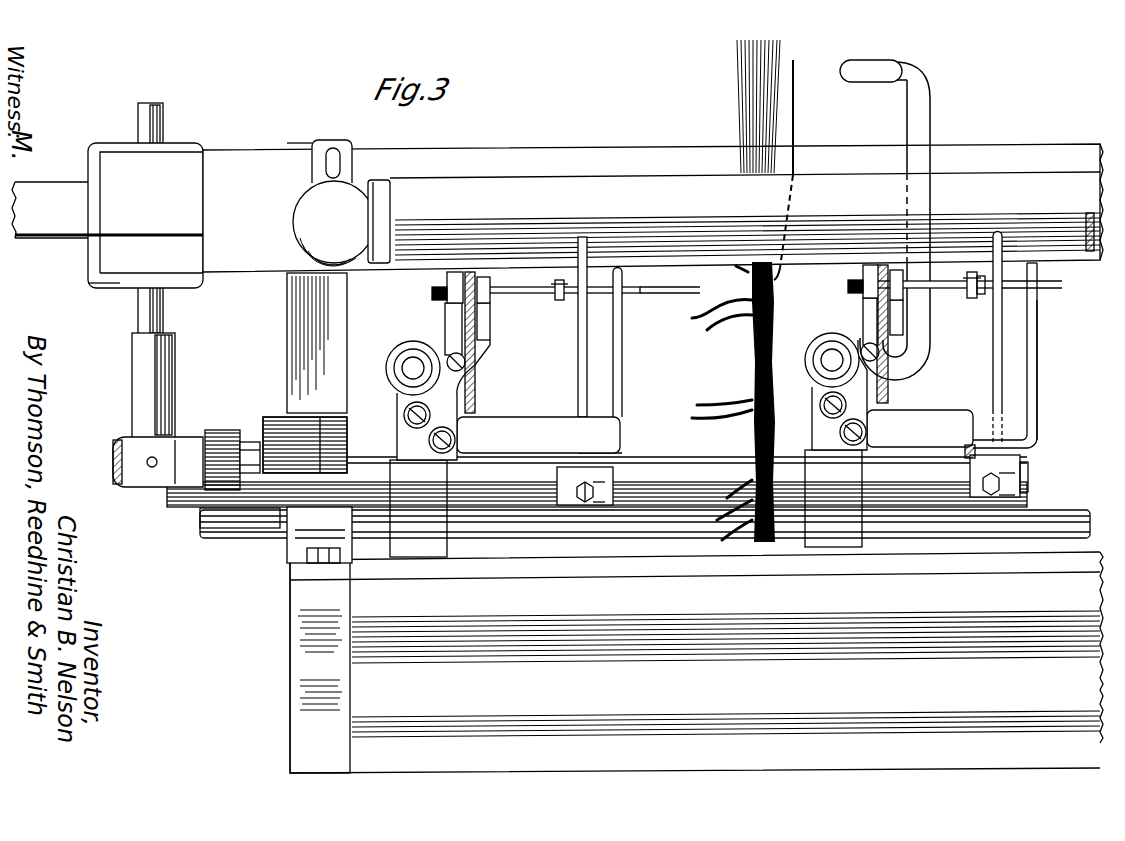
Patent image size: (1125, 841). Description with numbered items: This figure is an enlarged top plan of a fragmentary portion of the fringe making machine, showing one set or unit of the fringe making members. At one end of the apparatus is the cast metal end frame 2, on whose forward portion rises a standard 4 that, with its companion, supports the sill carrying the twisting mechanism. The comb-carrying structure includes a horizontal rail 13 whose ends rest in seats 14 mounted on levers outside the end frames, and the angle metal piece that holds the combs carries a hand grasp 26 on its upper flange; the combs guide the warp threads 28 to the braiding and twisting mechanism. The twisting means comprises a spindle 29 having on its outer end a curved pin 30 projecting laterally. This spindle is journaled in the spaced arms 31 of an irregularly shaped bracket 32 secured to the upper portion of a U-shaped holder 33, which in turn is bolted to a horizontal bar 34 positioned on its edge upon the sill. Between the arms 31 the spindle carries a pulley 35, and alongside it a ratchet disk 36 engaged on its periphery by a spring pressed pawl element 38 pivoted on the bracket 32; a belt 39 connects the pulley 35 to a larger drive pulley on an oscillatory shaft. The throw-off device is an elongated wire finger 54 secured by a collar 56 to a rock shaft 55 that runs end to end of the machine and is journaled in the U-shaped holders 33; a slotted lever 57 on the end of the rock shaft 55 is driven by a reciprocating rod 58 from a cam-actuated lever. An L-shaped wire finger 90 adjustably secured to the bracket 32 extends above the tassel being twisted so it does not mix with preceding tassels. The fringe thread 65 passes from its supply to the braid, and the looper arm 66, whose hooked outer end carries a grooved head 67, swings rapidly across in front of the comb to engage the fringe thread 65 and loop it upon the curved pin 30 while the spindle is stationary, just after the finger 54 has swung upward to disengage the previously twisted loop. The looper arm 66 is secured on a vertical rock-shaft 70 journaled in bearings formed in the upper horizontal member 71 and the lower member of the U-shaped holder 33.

The end frame 2 is at (285, 543).
The standard 4 is at (305, 683).
The horizontal rail 13 is at (117, 172).
The seats 14 is at (108, 313).
The hand grasp 26 is at (1030, 182).
The warp threads 28 is at (738, 62).
The spindle 29 is at (945, 298).
The curved pin 30 is at (558, 300).
The spaced arms 31 is at (442, 318).
The bracket 32 is at (460, 402).
The U-shaped holder 33 is at (392, 478).
The horizontal bar 34 is at (533, 567).
The pulley 35 is at (470, 272).
The ratchet disk 36 is at (444, 291).
The pawl element 38 is at (444, 302).
The belt 39 is at (477, 383).
The wire finger 54 is at (578, 360).
The rock shaft 55 is at (653, 487).
The collar 56 is at (603, 507).
The slotted lever 57 is at (228, 432).
The reciprocating rod 58 is at (143, 310).
The fringe thread 65 is at (797, 112).
The looper arm 66 is at (915, 128).
The head 67 is at (880, 70).
The rock-shaft 70 is at (410, 364).
The upper horizontal member 71 is at (392, 388).
The wire finger 90 is at (1038, 374).